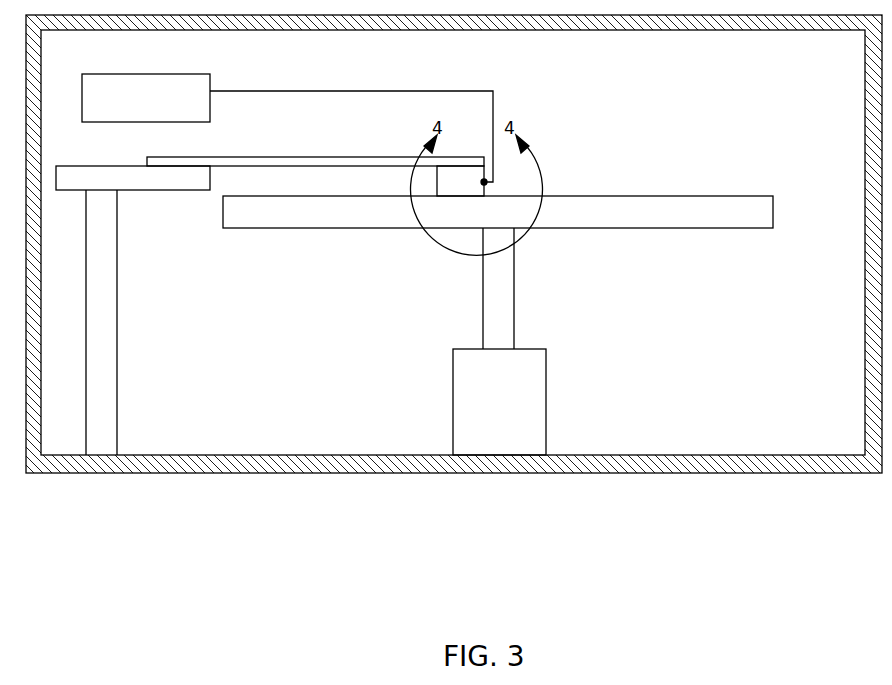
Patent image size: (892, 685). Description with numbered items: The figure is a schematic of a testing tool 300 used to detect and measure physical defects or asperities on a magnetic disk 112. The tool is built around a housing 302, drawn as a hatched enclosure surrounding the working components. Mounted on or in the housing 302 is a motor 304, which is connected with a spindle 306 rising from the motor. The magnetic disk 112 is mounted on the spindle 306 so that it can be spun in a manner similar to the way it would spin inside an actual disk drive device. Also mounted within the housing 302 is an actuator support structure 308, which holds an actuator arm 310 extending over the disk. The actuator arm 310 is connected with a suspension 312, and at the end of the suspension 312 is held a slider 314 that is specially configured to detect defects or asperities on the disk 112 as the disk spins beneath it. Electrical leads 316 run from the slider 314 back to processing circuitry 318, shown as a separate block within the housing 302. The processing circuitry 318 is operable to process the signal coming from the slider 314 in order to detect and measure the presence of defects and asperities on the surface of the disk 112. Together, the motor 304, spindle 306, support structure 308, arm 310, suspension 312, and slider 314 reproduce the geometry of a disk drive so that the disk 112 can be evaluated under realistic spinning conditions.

The testing tool 300 is at (538, 471).
The housing 302 is at (864, 291).
The motor 304 is at (540, 375).
The spindle 306 is at (516, 290).
The actuator support structure 308 is at (108, 312).
The actuator arm 310 is at (128, 178).
The suspension 312 is at (353, 162).
The slider 314 is at (449, 182).
The electrical leads 316 is at (494, 99).
The processing circuitry 318 is at (157, 100).
The magnetic disk 112 is at (637, 196).